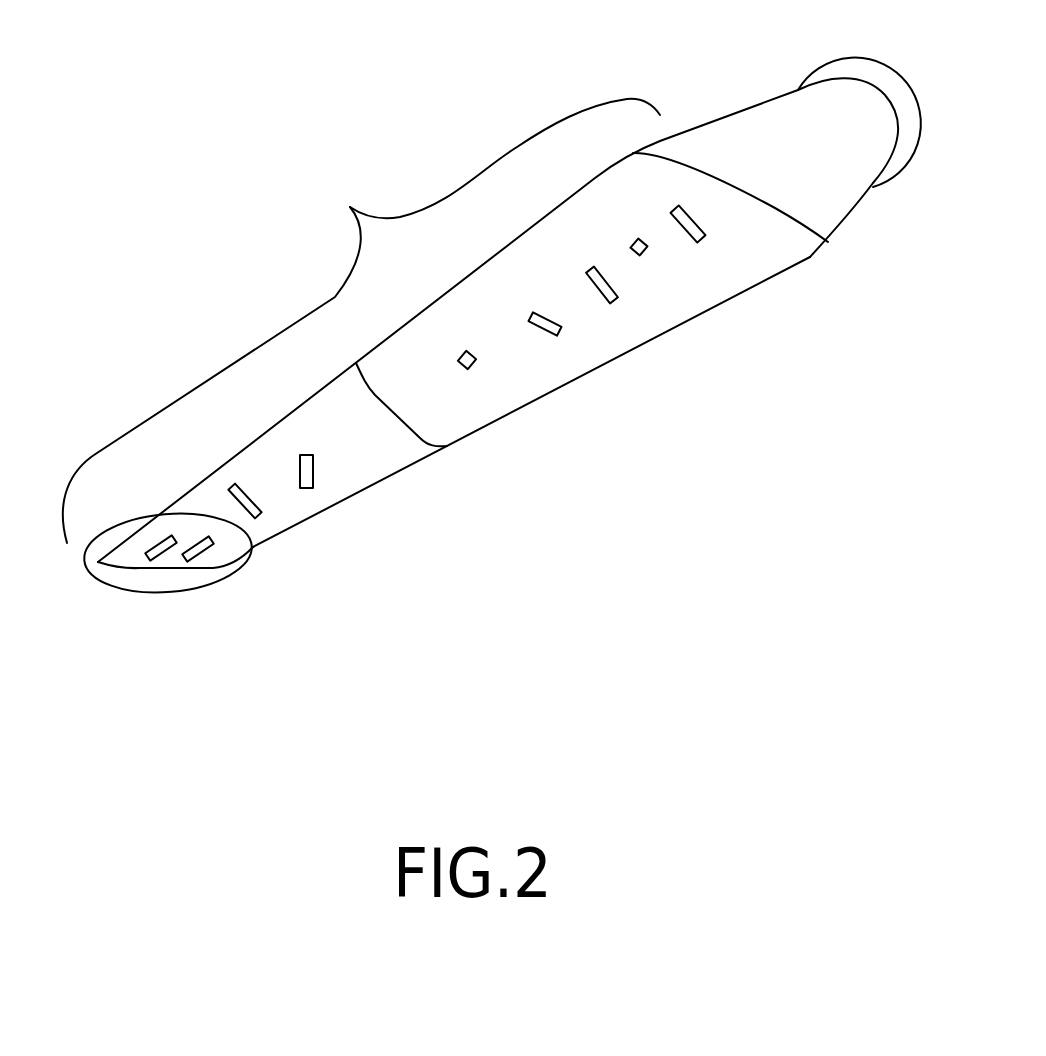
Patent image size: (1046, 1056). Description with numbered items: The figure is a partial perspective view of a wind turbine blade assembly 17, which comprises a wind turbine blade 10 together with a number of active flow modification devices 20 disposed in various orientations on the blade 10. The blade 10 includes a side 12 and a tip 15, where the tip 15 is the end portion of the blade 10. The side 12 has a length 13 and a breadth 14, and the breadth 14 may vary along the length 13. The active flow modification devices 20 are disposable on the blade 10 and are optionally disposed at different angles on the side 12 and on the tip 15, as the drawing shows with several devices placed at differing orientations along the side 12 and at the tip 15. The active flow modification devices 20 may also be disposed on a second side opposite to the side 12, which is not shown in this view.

The wind turbine blade 10 is at (596, 372).
The side 12 is at (688, 293).
The length 13 is at (361, 321).
The breadth 14 is at (393, 428).
The tip 15 is at (250, 572).
The wind turbine blade assembly 17 is at (257, 75).
The active flow modification devices 20 is at (630, 240).